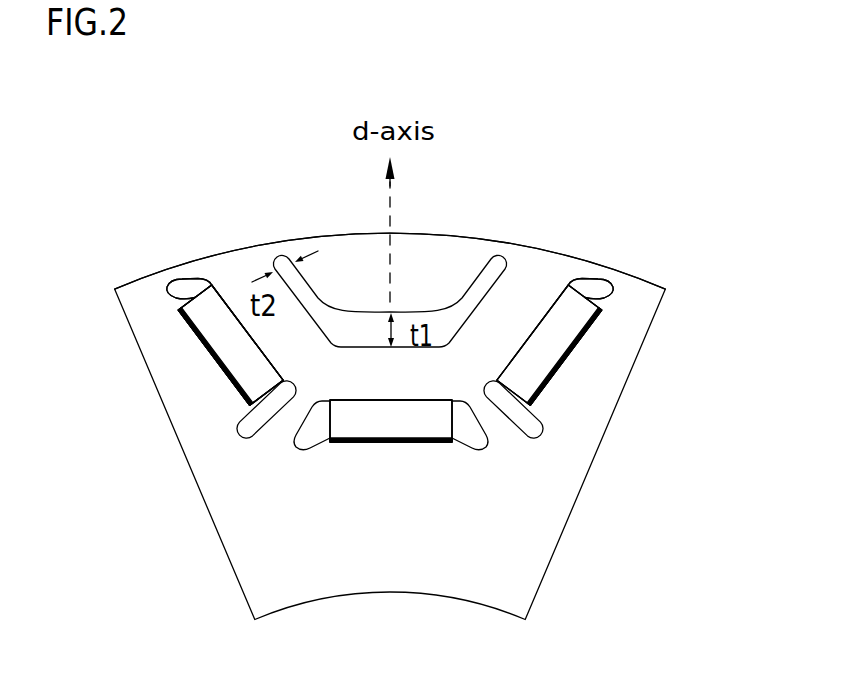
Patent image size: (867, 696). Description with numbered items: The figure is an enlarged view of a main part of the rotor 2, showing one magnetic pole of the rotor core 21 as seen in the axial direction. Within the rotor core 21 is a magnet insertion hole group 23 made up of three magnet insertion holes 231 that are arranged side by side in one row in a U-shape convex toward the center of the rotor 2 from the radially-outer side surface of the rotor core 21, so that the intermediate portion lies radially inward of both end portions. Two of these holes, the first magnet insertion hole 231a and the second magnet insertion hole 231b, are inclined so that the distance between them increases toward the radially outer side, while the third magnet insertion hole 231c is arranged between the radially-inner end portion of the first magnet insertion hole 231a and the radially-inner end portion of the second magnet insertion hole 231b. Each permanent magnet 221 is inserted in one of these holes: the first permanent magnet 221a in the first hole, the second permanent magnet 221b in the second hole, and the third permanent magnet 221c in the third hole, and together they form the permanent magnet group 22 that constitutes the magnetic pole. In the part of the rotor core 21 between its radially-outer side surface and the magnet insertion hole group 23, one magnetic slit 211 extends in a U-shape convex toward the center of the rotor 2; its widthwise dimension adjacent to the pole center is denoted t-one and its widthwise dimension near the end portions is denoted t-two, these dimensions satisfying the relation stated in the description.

The rotor 2 is at (116, 289).
The rotor core 21 is at (455, 245).
The magnetic slit 211 is at (351, 326).
The permanent magnet group 22 is at (533, 385).
The permanent magnet 221 is at (212, 318).
The first permanent magnet 221a is at (248, 385).
The second permanent magnet 221b is at (547, 360).
The third permanent magnet 221c is at (402, 430).
The magnet insertion hole group 23 is at (560, 318).
The magnet insertion hole 231 is at (267, 358).
The first magnet insertion hole 231a is at (212, 318).
The second magnet insertion hole 231b is at (560, 318).
The third magnet insertion hole 231c is at (387, 400).